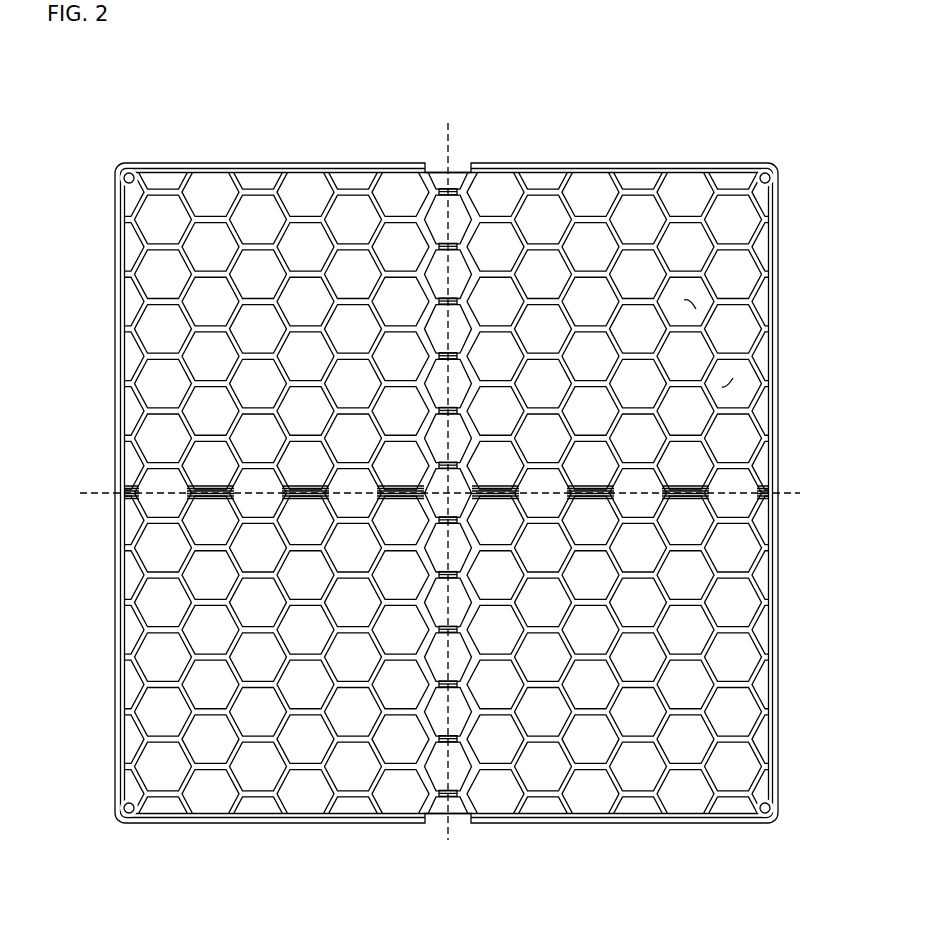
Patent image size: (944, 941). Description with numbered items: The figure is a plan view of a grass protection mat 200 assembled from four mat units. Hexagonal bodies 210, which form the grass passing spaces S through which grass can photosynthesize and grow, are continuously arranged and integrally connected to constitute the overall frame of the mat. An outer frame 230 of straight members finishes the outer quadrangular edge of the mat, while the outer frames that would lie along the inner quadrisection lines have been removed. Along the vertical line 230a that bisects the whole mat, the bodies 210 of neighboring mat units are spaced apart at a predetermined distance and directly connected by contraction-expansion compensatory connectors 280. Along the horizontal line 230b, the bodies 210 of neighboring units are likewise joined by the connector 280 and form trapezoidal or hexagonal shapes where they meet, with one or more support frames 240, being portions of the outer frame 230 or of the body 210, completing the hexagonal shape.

The grass protection mat 200 is at (482, 448).
The body 210 is at (513, 727).
The outer frame 230 is at (379, 162).
The vertical line 230a is at (449, 472).
The horizontal line 230b is at (461, 493).
The support frame 240 is at (200, 497).
The contraction-expansion compensatory connector 280 is at (447, 683).
The cell space S is at (724, 380).